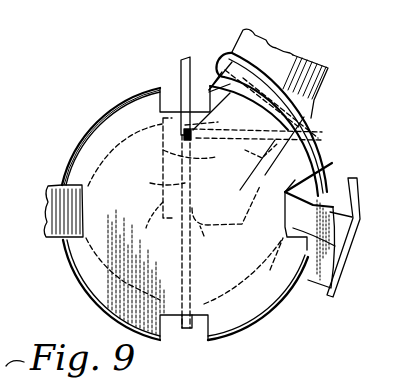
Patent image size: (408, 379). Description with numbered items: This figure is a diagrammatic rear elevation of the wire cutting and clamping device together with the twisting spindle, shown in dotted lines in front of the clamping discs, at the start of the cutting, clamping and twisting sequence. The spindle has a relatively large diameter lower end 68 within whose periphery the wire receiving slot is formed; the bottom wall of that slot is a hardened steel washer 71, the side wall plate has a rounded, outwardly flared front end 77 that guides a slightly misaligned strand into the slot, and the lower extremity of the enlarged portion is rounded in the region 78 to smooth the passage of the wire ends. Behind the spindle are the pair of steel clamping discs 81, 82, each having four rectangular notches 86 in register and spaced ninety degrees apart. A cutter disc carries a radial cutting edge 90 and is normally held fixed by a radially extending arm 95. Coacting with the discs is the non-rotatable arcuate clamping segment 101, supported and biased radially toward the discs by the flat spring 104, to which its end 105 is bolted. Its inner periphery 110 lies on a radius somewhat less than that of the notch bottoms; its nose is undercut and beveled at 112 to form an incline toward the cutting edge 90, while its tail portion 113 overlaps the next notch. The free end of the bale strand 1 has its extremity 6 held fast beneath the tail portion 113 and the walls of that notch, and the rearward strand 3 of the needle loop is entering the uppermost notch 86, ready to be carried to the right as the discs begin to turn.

The free end of the bale strand 1 is at (322, 134).
The rearward strand 3 is at (181, 62).
The end of the precedingly laid No. 1 strand 6 is at (293, 180).
The lower end of spindle 68 is at (164, 152).
The hardened steel washer 71 is at (150, 183).
The front end of side wall 77 is at (136, 268).
The rounded region of enlarged portion 78 is at (204, 241).
The clamping disc 81 is at (98, 130).
The clamping disc 82 is at (128, 113).
The notches 86 is at (170, 93).
The cutting edge 90 is at (271, 123).
The radially extending arm 95 is at (45, 188).
The arcuate clamping segment 101 is at (311, 120).
The biasing flat spring 104 is at (359, 212).
The end of segment 105 is at (300, 272).
The inner periphery of inner arm 110 is at (237, 245).
The undercut nose portion 112 is at (222, 82).
The tail portion 113 is at (285, 236).